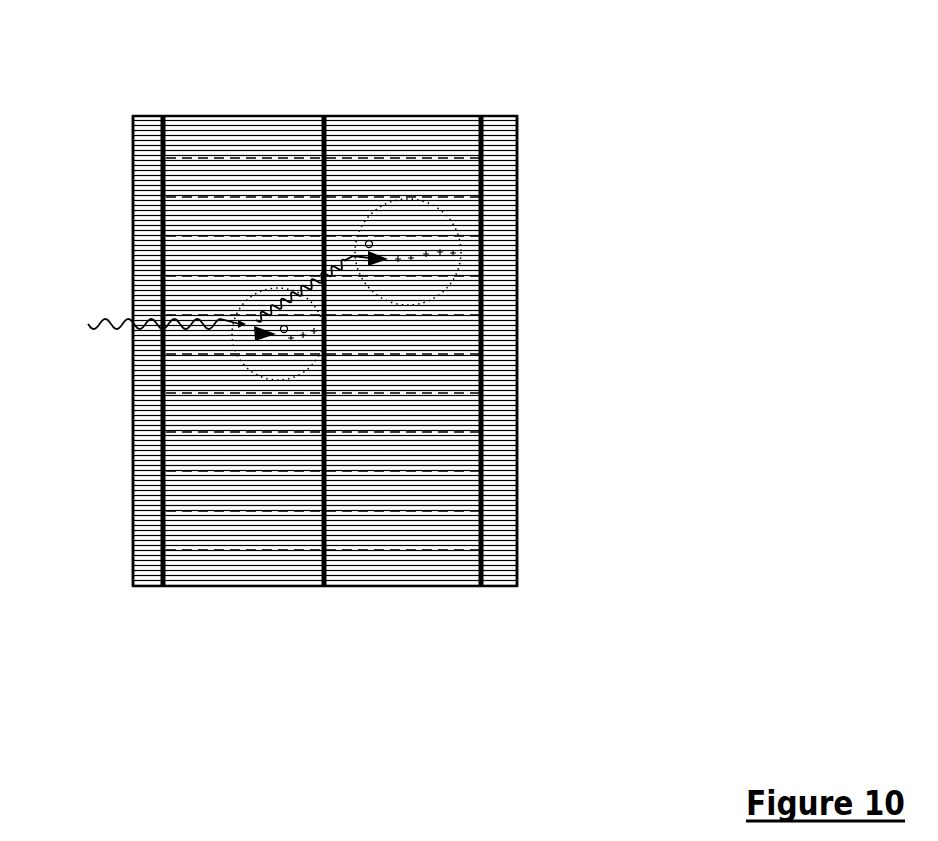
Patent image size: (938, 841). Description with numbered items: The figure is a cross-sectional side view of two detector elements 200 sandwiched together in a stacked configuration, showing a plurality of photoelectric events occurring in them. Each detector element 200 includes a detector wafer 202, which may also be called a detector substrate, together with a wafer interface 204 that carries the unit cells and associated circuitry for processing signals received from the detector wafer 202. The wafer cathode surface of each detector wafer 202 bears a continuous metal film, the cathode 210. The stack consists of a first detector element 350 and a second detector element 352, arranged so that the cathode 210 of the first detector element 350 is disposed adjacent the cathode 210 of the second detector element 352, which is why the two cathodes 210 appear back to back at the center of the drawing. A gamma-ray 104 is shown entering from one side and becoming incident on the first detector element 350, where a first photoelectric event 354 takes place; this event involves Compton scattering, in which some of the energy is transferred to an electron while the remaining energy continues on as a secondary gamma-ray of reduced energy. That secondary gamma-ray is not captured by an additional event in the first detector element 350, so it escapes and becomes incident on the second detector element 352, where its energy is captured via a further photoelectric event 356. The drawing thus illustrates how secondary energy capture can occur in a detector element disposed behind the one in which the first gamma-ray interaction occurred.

The detector element 200 is at (325, 343).
The detector wafer 202 is at (322, 287).
The wafer interface 204 is at (323, 351).
The cathode 210 is at (325, 351).
The gamma-ray 104 is at (220, 287).
The first detector element 350 is at (244, 395).
The second detector element 352 is at (403, 395).
The first photoelectric event 354 is at (277, 375).
The photoelectric event 356 is at (408, 292).